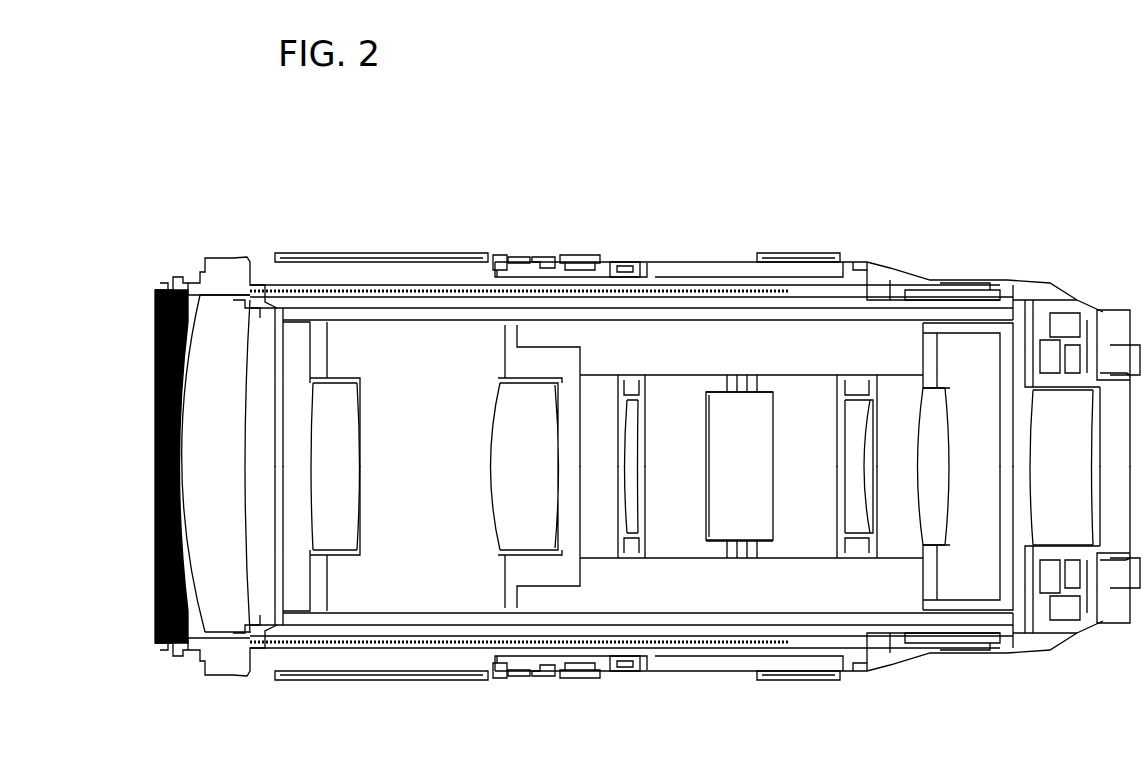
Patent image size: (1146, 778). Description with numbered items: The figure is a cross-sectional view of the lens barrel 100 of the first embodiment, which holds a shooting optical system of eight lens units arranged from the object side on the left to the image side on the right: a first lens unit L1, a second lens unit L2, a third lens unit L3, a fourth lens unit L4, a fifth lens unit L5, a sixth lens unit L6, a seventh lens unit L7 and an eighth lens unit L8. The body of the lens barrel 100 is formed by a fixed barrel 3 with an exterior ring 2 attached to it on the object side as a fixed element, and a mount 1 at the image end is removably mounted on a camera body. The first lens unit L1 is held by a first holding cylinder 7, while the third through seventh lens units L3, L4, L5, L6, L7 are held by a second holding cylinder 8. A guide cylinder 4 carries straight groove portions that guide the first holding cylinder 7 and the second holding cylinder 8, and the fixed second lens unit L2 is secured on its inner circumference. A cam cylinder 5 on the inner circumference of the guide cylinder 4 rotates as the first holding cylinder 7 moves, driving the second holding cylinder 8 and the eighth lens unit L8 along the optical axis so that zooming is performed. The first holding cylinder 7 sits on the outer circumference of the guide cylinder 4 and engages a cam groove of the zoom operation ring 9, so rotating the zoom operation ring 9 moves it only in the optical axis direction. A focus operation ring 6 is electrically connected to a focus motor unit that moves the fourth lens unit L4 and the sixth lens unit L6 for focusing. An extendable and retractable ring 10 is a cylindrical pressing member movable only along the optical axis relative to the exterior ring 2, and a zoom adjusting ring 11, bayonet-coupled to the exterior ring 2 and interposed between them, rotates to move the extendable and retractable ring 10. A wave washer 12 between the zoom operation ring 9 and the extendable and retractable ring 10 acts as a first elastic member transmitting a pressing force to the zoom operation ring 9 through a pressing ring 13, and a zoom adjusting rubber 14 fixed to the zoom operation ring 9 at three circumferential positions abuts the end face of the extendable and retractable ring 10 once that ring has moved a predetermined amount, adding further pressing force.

The lens barrel 100 is at (1074, 163).
The mount 1 is at (1118, 350).
The exterior ring 2 is at (740, 265).
The fixed barrel 3 is at (973, 285).
The guide cylinder 4 is at (416, 302).
The cam cylinder 5 is at (363, 310).
The focus operation ring 6 is at (840, 256).
The first holding cylinder 7 is at (248, 300).
The second holding cylinder 8 is at (676, 345).
The zoom operation ring 9 is at (314, 272).
The extendable and retractable ring 10 is at (591, 266).
The zoom adjusting ring 11 is at (628, 258).
The wave washer 12 is at (500, 266).
The pressing ring 13 is at (515, 262).
The zoom adjusting rubber 14 is at (551, 265).
The first lens unit L1 is at (247, 537).
The second lens unit L2 is at (332, 510).
The third lens unit L3 is at (518, 510).
The fourth lens unit L4 is at (635, 510).
The fifth lens unit L5 is at (723, 510).
The sixth lens unit L6 is at (853, 510).
The seventh lens unit L7 is at (935, 510).
The eighth lens unit L8 is at (1058, 510).